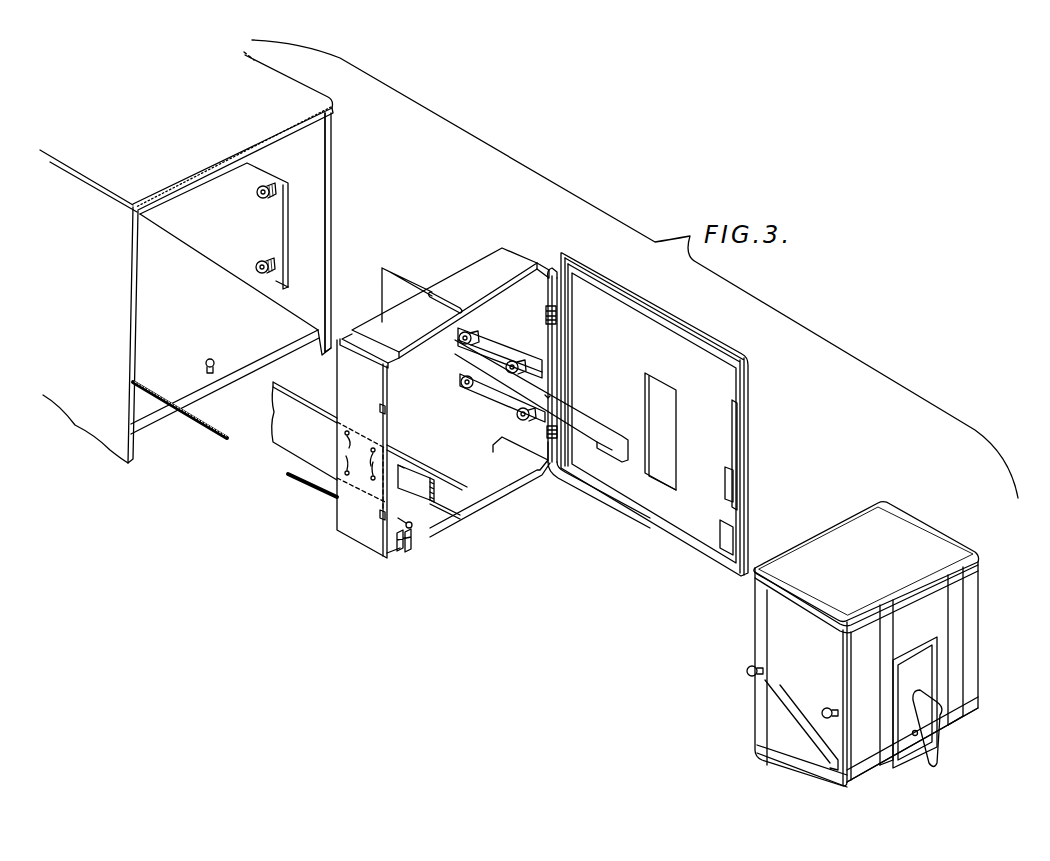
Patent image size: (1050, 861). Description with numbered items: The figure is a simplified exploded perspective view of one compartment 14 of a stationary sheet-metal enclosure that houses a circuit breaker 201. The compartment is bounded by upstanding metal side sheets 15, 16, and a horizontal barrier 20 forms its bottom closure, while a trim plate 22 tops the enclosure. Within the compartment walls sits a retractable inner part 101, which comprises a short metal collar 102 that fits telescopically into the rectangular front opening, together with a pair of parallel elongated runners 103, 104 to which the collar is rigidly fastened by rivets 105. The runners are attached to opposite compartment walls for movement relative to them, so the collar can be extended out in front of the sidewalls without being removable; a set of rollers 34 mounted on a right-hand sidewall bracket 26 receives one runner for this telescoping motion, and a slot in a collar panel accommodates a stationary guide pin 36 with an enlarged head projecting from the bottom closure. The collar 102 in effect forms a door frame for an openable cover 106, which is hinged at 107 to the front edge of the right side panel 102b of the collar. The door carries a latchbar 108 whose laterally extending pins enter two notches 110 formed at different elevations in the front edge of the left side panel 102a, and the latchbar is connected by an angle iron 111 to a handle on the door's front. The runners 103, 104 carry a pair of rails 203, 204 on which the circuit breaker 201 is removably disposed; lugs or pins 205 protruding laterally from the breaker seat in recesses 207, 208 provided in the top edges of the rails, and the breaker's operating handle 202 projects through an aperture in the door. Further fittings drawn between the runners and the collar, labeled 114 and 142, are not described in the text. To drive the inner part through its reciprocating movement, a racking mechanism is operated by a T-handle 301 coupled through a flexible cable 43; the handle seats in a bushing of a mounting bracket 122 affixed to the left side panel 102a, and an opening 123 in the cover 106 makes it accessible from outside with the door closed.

The compartment 14 is at (184, 297).
The side sheet 15 is at (83, 417).
The side sheet 16 is at (331, 166).
The horizontal barrier 20 is at (283, 343).
The trim plate 22 is at (284, 84).
The right-hand sidewall bracket 26 is at (285, 219).
The rollers 34 is at (260, 198).
The stationary guide pin 36 is at (213, 359).
The flexible cable 43 is at (183, 416).
The retractable inner part 101 is at (474, 411).
The collar 102 is at (458, 275).
The left side panel 102a is at (345, 530).
The right side panel 102b is at (551, 340).
The runner 103 is at (284, 441).
The runner 104 is at (388, 276).
The rivets 105 is at (357, 455).
The cover 106 is at (748, 385).
The hinge 107 is at (558, 316).
The latchbar 108 is at (732, 420).
The notches 110 is at (378, 406).
The angle iron 111 is at (725, 480).
The mounting straps 114 is at (515, 360).
The mounting bracket 122 is at (398, 556).
The opening 123 is at (724, 533).
The screw 142 is at (414, 524).
The circuit breaker 201 is at (978, 592).
The operating handle 202 is at (945, 742).
The rail 203 is at (431, 478).
The rail 204 is at (600, 426).
The lugs or pins 205 is at (825, 708).
The recesses 207 is at (408, 466).
The recesses 208 is at (568, 405).
The T-handle 301 is at (413, 540).